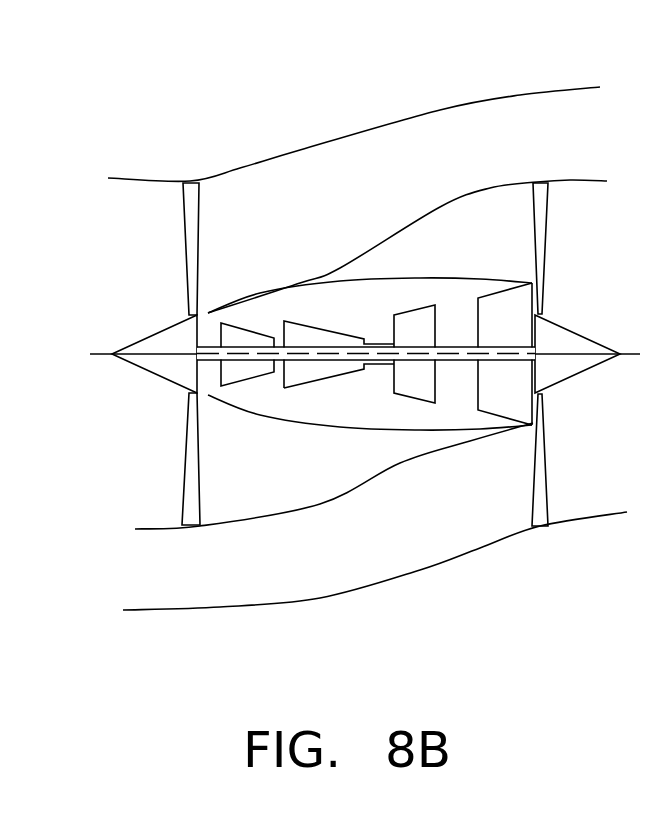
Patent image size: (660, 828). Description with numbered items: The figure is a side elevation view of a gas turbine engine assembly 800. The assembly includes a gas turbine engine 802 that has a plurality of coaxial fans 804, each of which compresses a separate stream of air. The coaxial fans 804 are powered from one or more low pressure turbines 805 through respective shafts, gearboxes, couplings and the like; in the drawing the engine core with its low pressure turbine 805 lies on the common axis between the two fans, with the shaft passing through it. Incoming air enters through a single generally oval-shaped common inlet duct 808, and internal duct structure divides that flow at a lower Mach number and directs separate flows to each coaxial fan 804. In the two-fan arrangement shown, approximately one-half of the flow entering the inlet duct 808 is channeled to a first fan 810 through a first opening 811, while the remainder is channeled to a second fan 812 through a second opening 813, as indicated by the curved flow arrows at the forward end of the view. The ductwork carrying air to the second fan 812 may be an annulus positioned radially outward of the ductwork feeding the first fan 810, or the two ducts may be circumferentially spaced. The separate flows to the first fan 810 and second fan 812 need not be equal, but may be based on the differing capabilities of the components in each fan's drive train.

The gas turbine engine assembly 800 is at (224, 97).
The gas turbine engine 802 is at (365, 408).
The coaxial fans 804 is at (197, 248).
The low pressure turbine 805 is at (511, 407).
The common inlet duct 808 is at (189, 612).
The first fan 810 is at (186, 221).
The first opening 811 is at (121, 212).
The second fan 812 is at (546, 260).
The second opening 813 is at (104, 586).